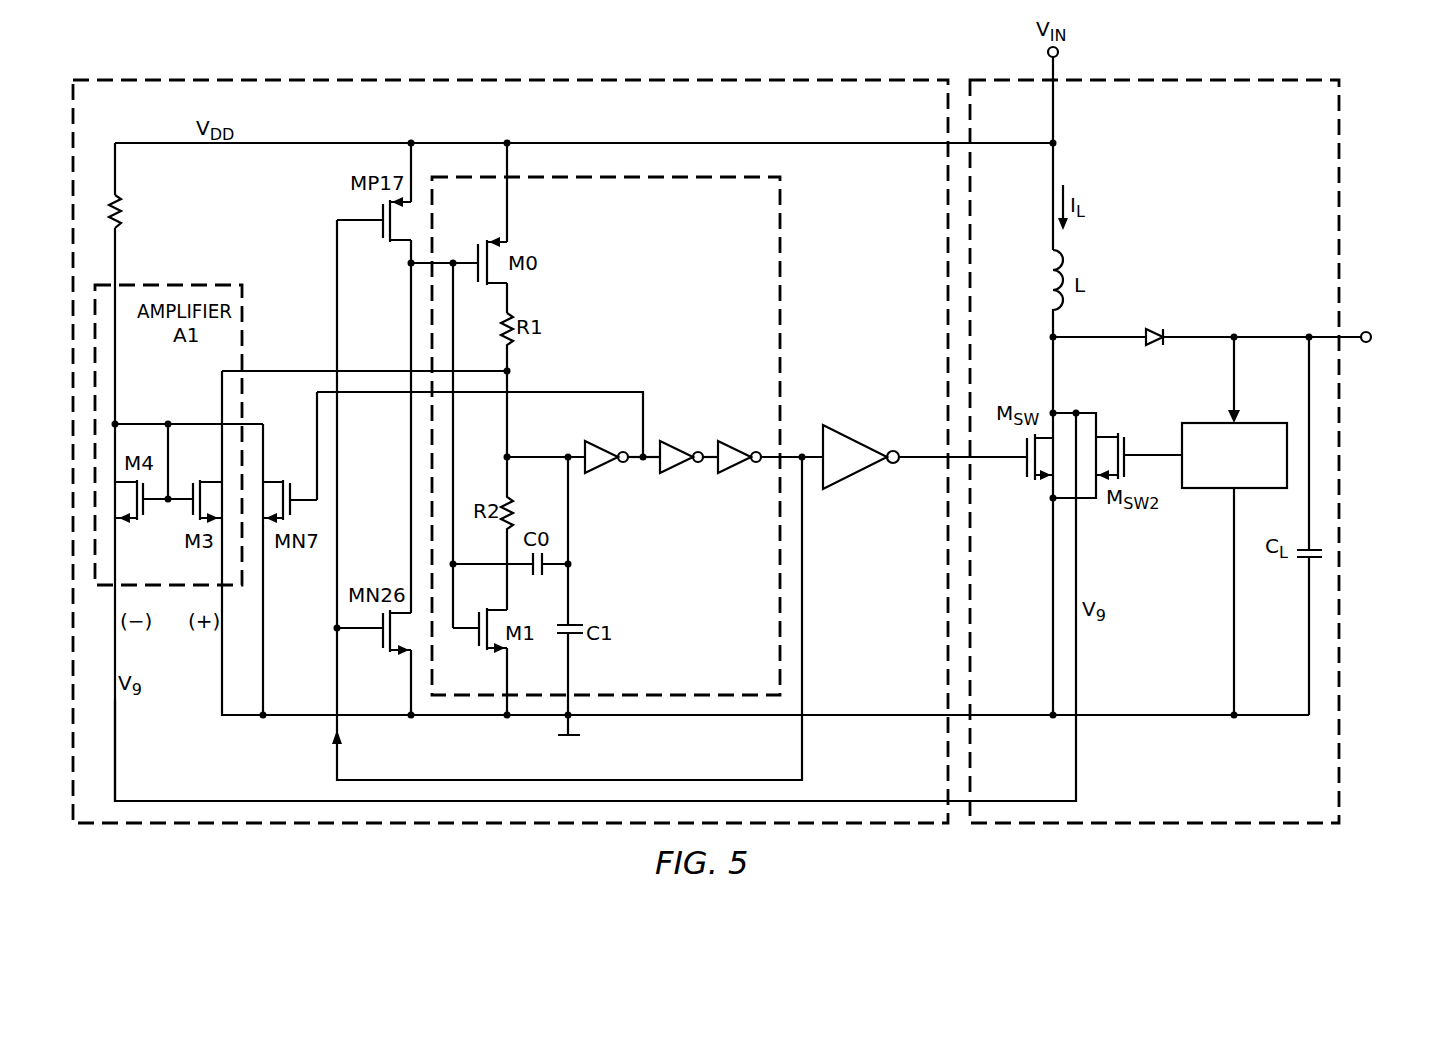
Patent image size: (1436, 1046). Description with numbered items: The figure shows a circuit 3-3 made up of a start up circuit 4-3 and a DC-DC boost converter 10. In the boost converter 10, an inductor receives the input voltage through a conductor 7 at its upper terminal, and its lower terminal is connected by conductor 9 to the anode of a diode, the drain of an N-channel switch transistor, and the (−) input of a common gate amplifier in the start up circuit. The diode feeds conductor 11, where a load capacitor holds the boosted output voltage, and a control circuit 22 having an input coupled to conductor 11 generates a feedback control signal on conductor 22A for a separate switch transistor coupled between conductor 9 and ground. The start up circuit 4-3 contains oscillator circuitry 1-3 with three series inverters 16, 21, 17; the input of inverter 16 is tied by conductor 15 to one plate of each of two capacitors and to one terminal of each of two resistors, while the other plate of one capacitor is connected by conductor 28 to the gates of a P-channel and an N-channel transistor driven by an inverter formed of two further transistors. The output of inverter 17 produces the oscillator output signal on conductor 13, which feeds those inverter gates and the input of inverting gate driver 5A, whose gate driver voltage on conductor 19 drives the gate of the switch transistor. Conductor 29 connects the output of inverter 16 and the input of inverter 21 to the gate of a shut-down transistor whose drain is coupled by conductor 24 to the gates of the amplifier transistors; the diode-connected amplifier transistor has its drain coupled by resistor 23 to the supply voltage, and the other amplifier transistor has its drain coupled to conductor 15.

The circuit 3-3 is at (266, 44).
The start up circuit 4-3 is at (469, 74).
The boost converter 10 is at (1235, 72).
The input voltage node VIN 7 is at (1055, 166).
The resistor 23 is at (120, 216).
The conductor 13 is at (336, 252).
The conductor 28 is at (446, 258).
The conductor 15 is at (504, 366).
The conductor 29 is at (586, 391).
The oscillator circuitry 1-3 is at (790, 240).
The conductor 11 is at (1306, 334).
The amplifier input node 24 is at (140, 424).
The inverter 16 is at (598, 468).
The inverter 21 is at (674, 468).
The inverter 17 is at (732, 468).
The inverting gate driver 5A is at (856, 478).
The gate driver output conductor 19 is at (914, 460).
The conductor 9 is at (116, 724).
The conductor 22A is at (1160, 453).
The control circuit 22 is at (1262, 422).